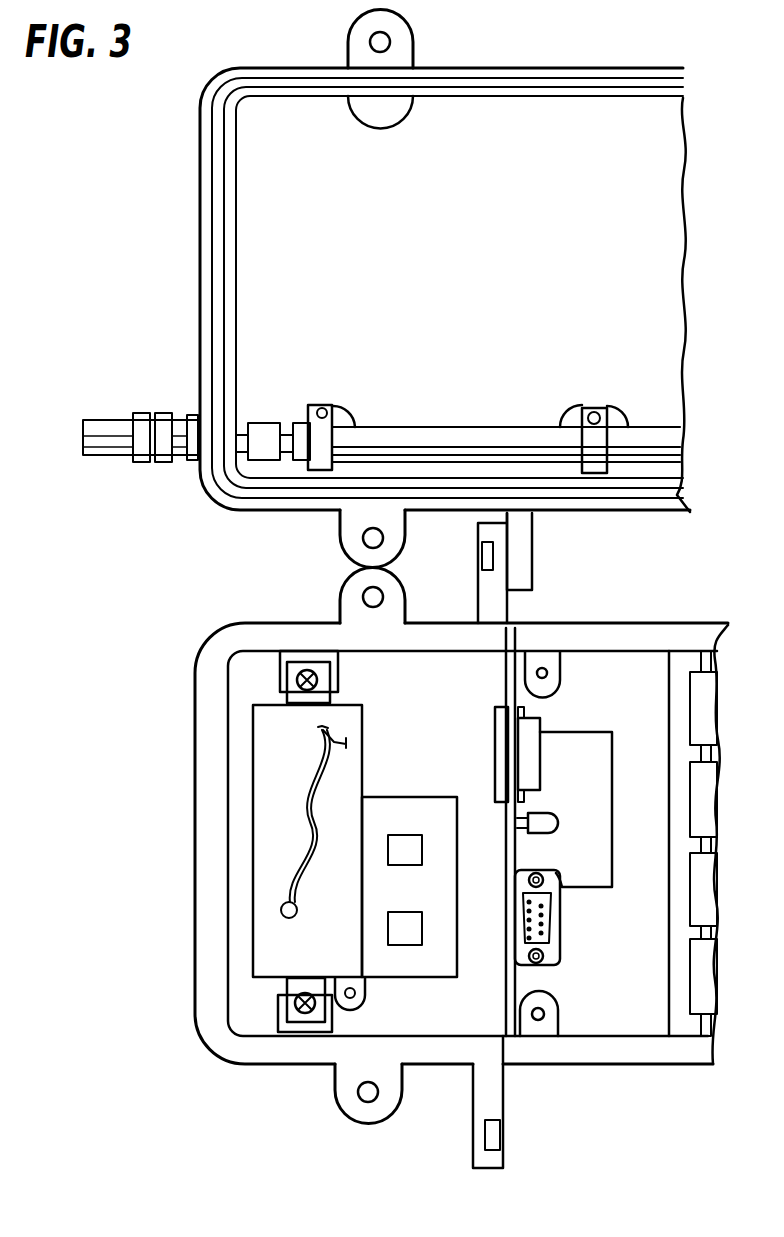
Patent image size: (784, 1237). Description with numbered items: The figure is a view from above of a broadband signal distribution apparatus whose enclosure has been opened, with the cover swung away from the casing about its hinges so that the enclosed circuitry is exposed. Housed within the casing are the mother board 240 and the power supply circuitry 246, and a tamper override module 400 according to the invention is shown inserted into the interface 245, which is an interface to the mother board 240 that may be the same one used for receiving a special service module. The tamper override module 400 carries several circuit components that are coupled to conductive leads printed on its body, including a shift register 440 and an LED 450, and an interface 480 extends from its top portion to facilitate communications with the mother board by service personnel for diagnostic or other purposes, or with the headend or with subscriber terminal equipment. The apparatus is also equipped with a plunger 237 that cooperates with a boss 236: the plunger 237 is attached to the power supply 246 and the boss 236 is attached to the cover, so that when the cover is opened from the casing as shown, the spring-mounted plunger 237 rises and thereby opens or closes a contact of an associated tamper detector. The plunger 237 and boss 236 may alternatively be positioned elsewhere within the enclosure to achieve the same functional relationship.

The boss 236 is at (384, 129).
The mother board 240 is at (636, 1105).
The plunger 237 is at (348, 1008).
The interface 245 is at (495, 772).
The power supply circuitry 246 is at (265, 810).
The tamper override module 400 is at (508, 887).
The shift register 440 is at (542, 733).
The LED 450 is at (545, 812).
The interface 480 is at (560, 932).